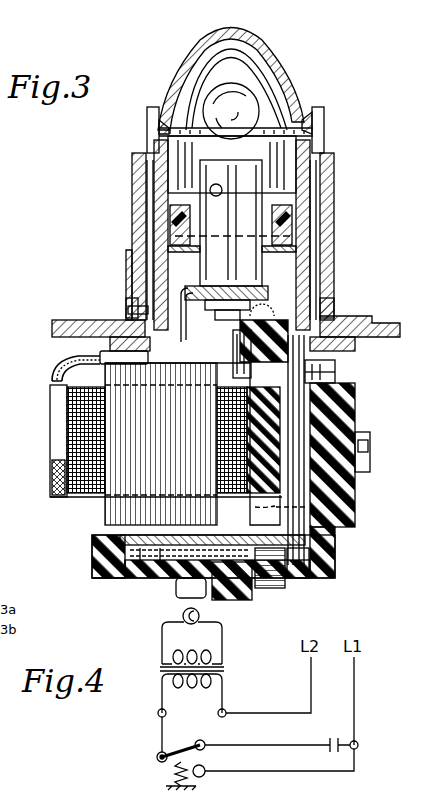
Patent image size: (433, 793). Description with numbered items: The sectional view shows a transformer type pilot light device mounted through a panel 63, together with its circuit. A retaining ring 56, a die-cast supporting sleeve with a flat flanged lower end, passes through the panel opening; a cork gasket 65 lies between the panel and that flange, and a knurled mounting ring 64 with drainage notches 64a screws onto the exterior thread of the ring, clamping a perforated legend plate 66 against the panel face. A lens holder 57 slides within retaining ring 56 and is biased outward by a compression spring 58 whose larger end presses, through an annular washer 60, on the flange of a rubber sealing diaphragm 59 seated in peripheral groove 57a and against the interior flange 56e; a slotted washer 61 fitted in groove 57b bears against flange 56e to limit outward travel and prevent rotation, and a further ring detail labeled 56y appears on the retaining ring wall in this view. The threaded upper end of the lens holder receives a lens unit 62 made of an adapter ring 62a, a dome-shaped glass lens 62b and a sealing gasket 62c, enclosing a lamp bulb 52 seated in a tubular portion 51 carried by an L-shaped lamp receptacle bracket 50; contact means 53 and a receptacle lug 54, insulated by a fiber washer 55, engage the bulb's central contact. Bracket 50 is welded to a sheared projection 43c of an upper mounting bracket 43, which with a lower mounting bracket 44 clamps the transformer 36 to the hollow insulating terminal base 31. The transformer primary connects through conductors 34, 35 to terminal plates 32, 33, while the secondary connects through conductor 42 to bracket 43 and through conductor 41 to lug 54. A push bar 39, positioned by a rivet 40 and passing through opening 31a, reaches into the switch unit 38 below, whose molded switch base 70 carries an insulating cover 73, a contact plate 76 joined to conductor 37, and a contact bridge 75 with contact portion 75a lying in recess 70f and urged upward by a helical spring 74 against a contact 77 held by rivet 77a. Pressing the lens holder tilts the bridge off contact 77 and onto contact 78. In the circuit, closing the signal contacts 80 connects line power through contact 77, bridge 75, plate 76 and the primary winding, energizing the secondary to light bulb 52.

In FIG. 3, the lens unit 62 is at (263, 40).
In FIG. 3, the dome-shaped glass lens 62b is at (290, 60).
In FIG. 3, the lamp bulb 52 is at (237, 88).
In FIG. 4, the lamp bulb 52 is at (203, 624).
In FIG. 3, the adapter ring 62a is at (313, 111).
In FIG. 3, the sealing gasket 62c is at (160, 128).
In FIG. 3, the mounting ring 64 is at (333, 166).
In FIG. 3, the lens holder 57 is at (162, 176).
In FIG. 3, the retaining ring 56 is at (152, 200).
In FIG. 3, the compression spring 58 is at (302, 203).
In FIG. 3, the peripheral groove 57a is at (170, 217).
In FIG. 3, the annular washer 60 is at (300, 223).
In FIG. 3, the socket spring 56y is at (172, 224).
In FIG. 3, the interior flange 56e is at (310, 238).
In FIG. 3, the sealing diaphragm 59 is at (168, 250).
In FIG. 3, the slotted washer 61 is at (296, 256).
In FIG. 3, the tubular portion 51 is at (300, 276).
In FIG. 3, the peripheral groove 57b is at (184, 292).
In FIG. 3, the lamp receptacle bracket 50 is at (182, 292).
In FIG. 3, the receptacle lug 54 is at (245, 336).
In FIG. 3, the fiber insulating washer 55 is at (262, 296).
In FIG. 3, the drainage openings 64a is at (134, 304).
In FIG. 3, the contact means 53 is at (128, 304).
In FIG. 3, the upwardly sheared projection 43c is at (140, 313).
In FIG. 3, the insulated wire conductor 41 is at (332, 304).
In FIG. 4, the insulated wire conductor 41 is at (225, 643).
In FIG. 3, the legend plate 66 is at (376, 321).
In FIG. 3, the panel 63 is at (78, 331).
In FIG. 3, the gasket 65 is at (110, 342).
In FIG. 3, the rivet 40 is at (340, 352).
In FIG. 3, the upper mounting bracket 43 is at (100, 358).
In FIG. 3, the secondary conductor 42 is at (56, 380).
In FIG. 4, the secondary conductor 42 is at (160, 630).
In FIG. 3, the opening 31a is at (326, 372).
In FIG. 3, the push bar 39 is at (322, 386).
In FIG. 3, the transformer 36 is at (58, 431).
In FIG. 4, the transformer 36 is at (225, 665).
In FIG. 3, the lower mounting bracket 44 is at (103, 517).
In FIG. 3, the terminal base 31 is at (348, 421).
In FIG. 3, the terminal plate 33 is at (372, 463).
In FIG. 4, the terminal plate 33 is at (226, 711).
In FIG. 3, the insulated wire conductor 35 is at (267, 510).
In FIG. 4, the insulated wire conductor 35 is at (225, 691).
In FIG. 3, the insulating cover 73 is at (96, 536).
In FIG. 3, the switch base 70 is at (96, 553).
In FIG. 3, the contact plate 76 is at (100, 562).
In FIG. 3, the elongated recess 70f is at (108, 580).
In FIG. 3, the switch unit 38 is at (125, 590).
In FIG. 3, the contact bridge 75 is at (150, 590).
In FIG. 4, the contact bridge 75 is at (184, 750).
In FIG. 3, the contact portion 75a is at (218, 597).
In FIG. 3, the helical compression spring 74 is at (266, 589).
In FIG. 4, the helical compression spring 74 is at (161, 762).
In FIG. 3, the rivet 77a is at (314, 580).
In FIG. 4, the insulated wire conductor 34 is at (160, 698).
In FIG. 4, the terminal plate 32 is at (160, 717).
In FIG. 4, the wire conductor 37 is at (160, 734).
In FIG. 4, the contact 77 is at (204, 741).
In FIG. 4, the contact 78 is at (206, 768).
In FIG. 4, the signal contacts 80 is at (334, 737).